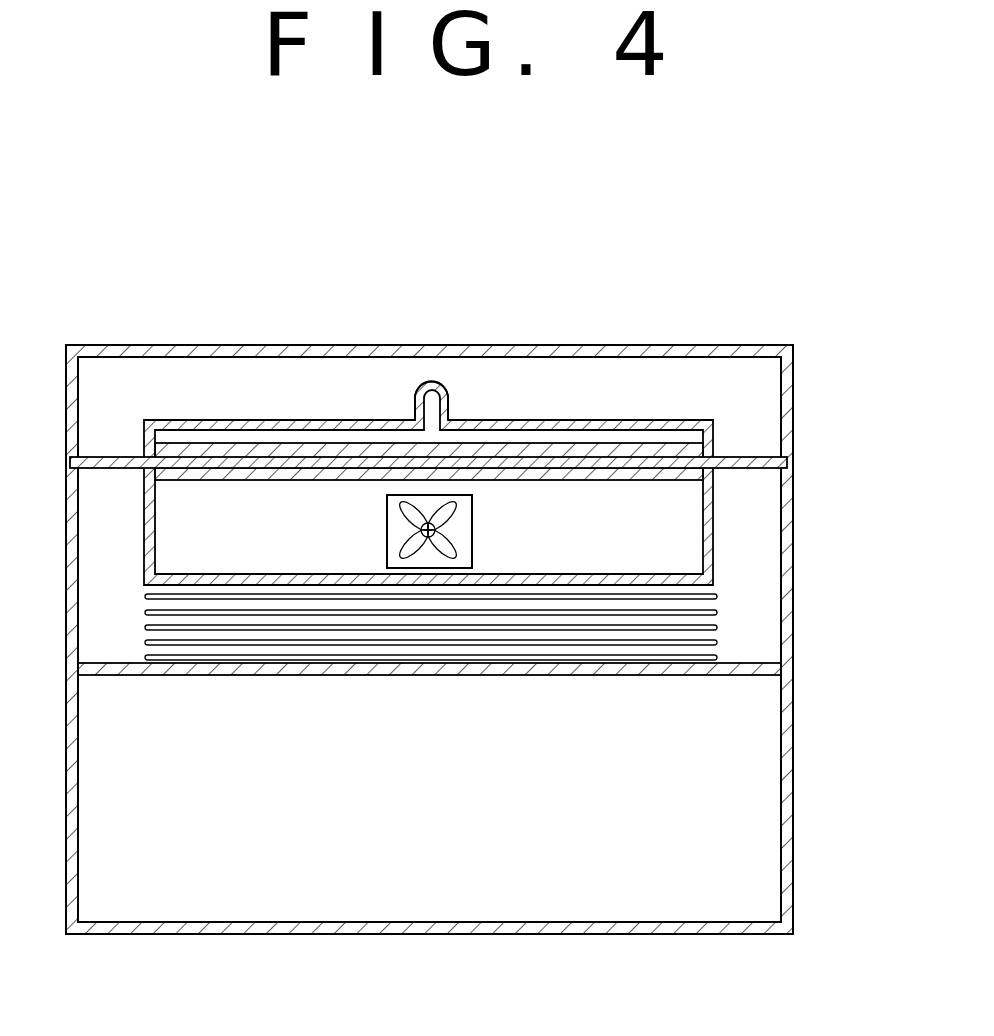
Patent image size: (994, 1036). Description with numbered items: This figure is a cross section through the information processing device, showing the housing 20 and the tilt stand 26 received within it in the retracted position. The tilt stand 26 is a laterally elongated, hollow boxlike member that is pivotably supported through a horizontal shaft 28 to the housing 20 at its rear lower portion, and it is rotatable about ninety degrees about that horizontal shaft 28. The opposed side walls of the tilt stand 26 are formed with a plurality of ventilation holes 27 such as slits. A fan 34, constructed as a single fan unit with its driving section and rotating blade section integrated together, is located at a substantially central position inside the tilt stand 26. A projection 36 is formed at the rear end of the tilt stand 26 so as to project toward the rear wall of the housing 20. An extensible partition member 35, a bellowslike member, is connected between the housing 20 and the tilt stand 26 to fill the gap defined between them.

The housing 20 is at (267, 343).
The tilt stand 26 is at (622, 412).
The ventilation holes 27 is at (370, 419).
The horizontal shaft 28 is at (745, 458).
The fan 34 is at (408, 530).
The extensible partition member 35 is at (453, 612).
The projection 36 is at (430, 381).